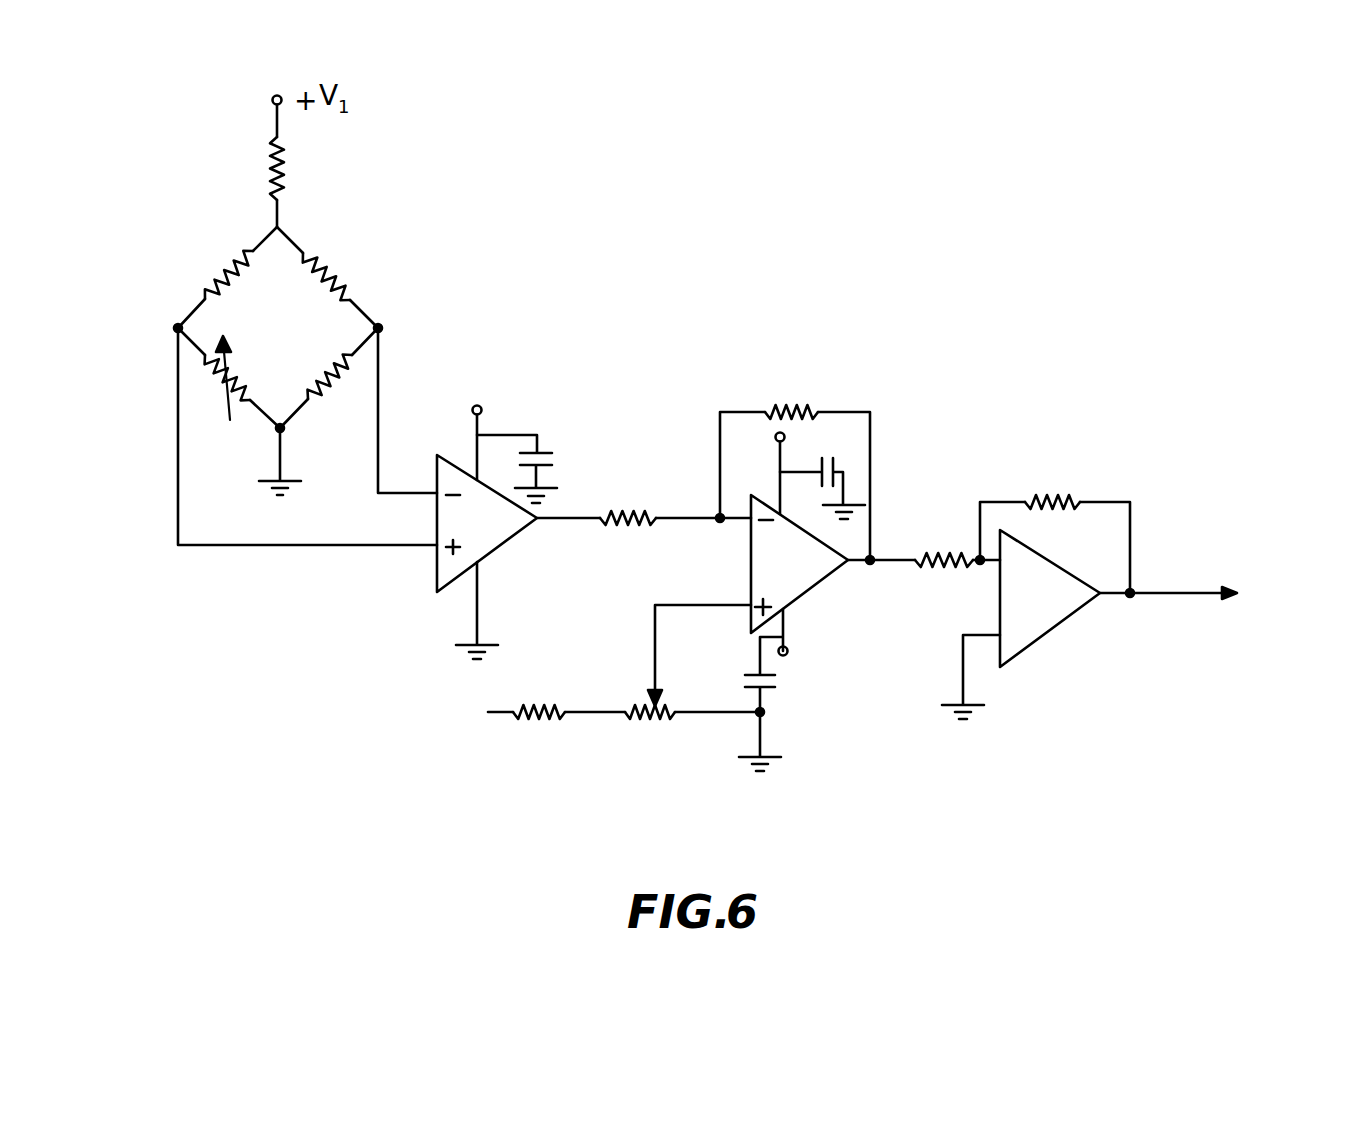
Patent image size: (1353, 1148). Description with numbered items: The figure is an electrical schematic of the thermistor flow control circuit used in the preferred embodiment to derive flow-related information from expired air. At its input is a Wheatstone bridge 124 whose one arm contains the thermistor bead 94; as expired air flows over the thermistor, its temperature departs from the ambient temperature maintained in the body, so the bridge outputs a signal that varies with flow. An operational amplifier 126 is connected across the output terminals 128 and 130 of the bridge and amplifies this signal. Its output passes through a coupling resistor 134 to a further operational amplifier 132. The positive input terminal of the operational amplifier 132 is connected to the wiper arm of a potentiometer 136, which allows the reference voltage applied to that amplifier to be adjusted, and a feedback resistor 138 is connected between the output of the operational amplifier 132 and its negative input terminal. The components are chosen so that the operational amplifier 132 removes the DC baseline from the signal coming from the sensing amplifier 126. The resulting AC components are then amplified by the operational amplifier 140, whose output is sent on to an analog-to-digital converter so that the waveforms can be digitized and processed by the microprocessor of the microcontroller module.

The thermistor bead 94 is at (228, 388).
The Wheatstone bridge 124 is at (300, 272).
The operational amplifier 126 is at (483, 527).
The output terminal 128 is at (380, 329).
The output terminal 130 is at (176, 327).
The operational amplifier 132 is at (810, 567).
The coupling resistor 134 is at (626, 500).
The potentiometer 136 is at (650, 715).
The feedback resistor 138 is at (790, 395).
The operational amplifier 140 is at (1027, 622).